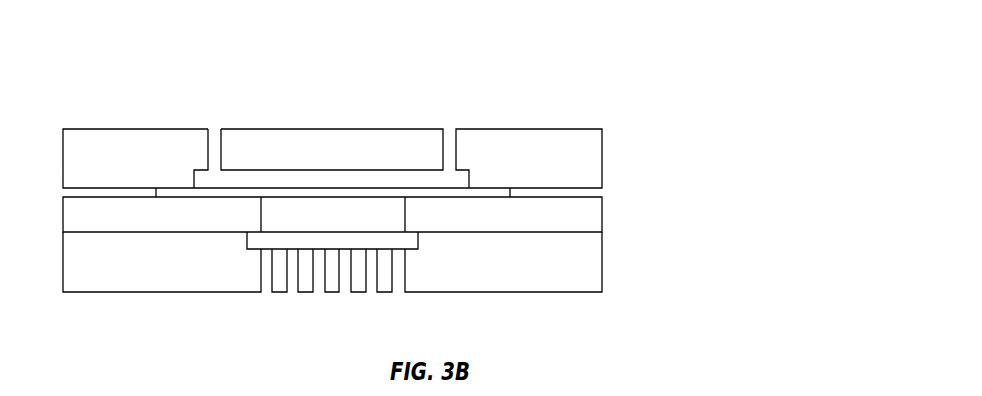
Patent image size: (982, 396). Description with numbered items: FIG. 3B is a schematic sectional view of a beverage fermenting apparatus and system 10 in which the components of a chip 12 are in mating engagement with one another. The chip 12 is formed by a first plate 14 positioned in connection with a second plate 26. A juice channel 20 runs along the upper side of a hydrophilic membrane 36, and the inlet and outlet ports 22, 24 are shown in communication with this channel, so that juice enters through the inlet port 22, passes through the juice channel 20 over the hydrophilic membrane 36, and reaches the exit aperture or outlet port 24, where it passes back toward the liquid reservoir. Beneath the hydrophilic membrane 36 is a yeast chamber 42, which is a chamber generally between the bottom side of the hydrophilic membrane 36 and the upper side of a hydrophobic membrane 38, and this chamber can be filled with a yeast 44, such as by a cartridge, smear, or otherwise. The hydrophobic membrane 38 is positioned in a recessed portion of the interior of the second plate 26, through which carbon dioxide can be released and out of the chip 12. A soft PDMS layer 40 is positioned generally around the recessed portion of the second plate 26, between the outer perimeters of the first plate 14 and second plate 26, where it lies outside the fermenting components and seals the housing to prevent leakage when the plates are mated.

The microfluidic device 10 is at (193, 62).
The chip 12 is at (605, 115).
The first plate 14 is at (110, 128).
The juice channel 20 is at (416, 178).
The inlet port 22 is at (453, 133).
The outlet port 24 is at (210, 133).
The second plate 26 is at (90, 292).
The hydrophilic membrane 36 is at (320, 198).
The hydrophobic membrane 38 is at (272, 240).
The PDMS layer 40 is at (608, 198).
The yeast chamber 42 is at (392, 215).
The yeast 44 is at (377, 227).